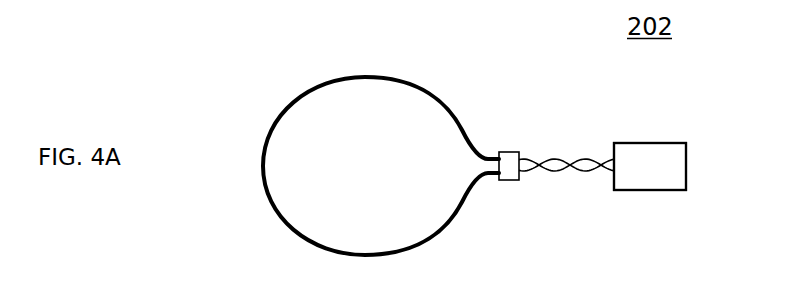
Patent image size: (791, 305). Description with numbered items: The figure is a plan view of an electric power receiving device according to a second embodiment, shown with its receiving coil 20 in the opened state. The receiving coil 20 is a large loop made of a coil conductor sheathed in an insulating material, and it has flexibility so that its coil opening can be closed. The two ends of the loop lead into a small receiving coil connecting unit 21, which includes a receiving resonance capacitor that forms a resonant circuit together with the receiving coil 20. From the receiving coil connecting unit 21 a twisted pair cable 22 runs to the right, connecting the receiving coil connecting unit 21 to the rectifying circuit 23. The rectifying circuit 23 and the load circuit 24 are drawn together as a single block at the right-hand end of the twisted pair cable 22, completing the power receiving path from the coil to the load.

The receiving coil 20 is at (262, 164).
The receiving coil connecting unit 21 is at (514, 152).
The twisted pair cable 22 is at (607, 153).
The rectifying circuit 23 is at (684, 143).
The load circuit 24 is at (650, 166).